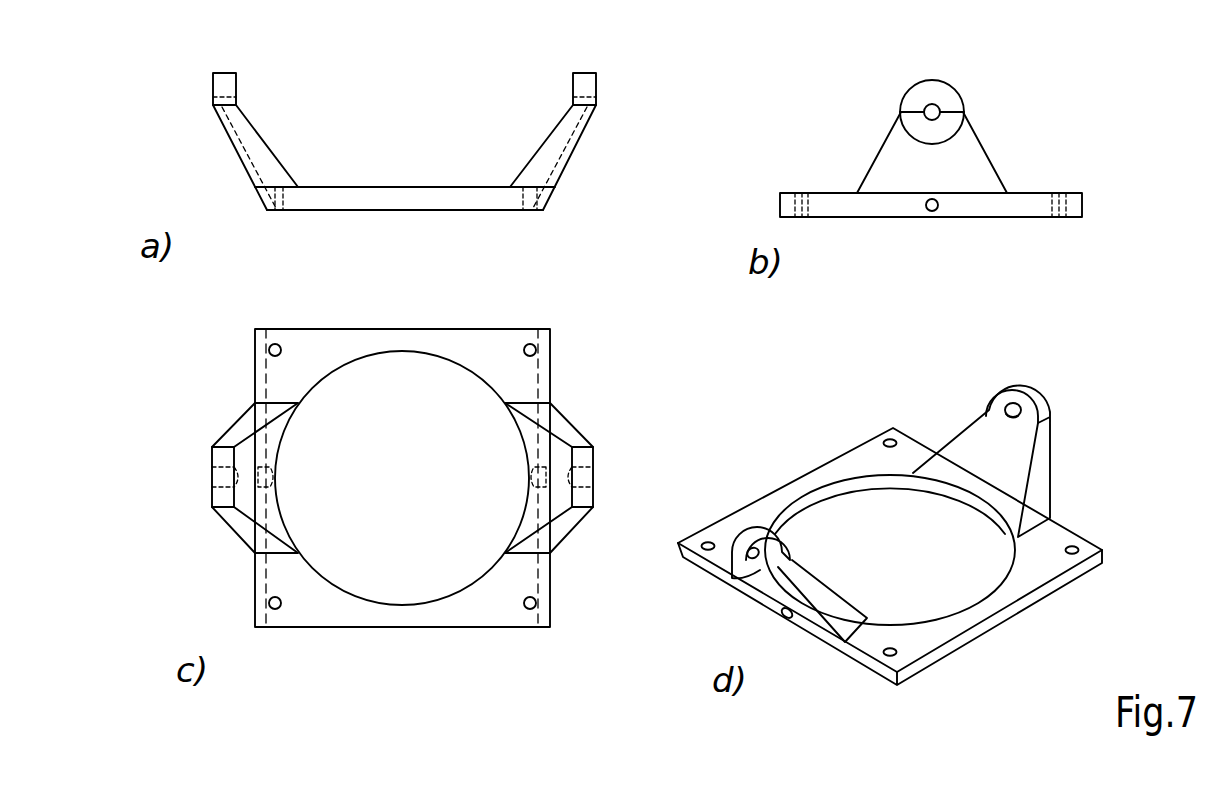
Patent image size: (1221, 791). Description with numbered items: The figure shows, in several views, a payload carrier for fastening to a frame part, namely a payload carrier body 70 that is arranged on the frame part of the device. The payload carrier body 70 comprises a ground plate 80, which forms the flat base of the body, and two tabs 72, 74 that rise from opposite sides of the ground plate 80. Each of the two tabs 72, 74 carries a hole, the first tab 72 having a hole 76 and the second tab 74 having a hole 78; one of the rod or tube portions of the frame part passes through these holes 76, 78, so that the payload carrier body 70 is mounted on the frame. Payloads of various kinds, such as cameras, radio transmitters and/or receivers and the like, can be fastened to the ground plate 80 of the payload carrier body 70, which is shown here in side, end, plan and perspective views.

The payload carrier body 70 is at (603, 138).
The tab 72 is at (245, 147).
The tab 74 is at (555, 163).
The hole 76 is at (215, 103).
The hole 78 is at (597, 103).
The ground plate 80 is at (437, 198).